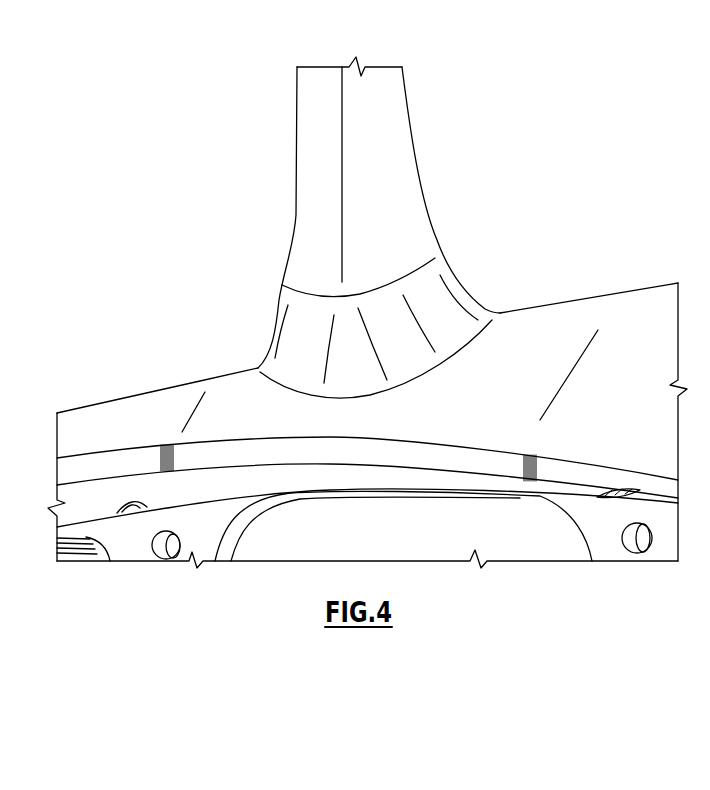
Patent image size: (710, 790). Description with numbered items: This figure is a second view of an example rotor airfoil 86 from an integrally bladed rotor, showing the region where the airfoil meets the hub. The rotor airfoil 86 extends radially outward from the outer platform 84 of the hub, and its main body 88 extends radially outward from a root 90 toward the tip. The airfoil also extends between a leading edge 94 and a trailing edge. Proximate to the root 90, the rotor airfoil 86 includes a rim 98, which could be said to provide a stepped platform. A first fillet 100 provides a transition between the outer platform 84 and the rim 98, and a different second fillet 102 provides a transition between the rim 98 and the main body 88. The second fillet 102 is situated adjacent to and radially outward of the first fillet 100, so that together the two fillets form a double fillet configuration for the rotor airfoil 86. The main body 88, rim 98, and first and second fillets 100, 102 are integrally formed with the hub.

The outer platform 84 is at (166, 418).
The rotor airfoil 86 is at (238, 93).
The main body 88 is at (394, 155).
The root 90 is at (515, 278).
The leading edge 94 is at (355, 97).
The rim 98 is at (268, 283).
The first fillet 100 is at (250, 340).
The second fillet 102 is at (268, 248).